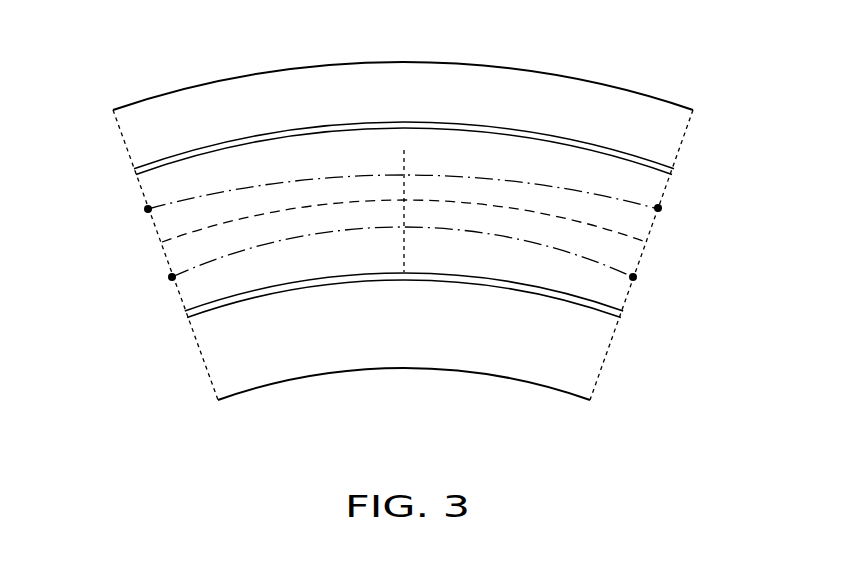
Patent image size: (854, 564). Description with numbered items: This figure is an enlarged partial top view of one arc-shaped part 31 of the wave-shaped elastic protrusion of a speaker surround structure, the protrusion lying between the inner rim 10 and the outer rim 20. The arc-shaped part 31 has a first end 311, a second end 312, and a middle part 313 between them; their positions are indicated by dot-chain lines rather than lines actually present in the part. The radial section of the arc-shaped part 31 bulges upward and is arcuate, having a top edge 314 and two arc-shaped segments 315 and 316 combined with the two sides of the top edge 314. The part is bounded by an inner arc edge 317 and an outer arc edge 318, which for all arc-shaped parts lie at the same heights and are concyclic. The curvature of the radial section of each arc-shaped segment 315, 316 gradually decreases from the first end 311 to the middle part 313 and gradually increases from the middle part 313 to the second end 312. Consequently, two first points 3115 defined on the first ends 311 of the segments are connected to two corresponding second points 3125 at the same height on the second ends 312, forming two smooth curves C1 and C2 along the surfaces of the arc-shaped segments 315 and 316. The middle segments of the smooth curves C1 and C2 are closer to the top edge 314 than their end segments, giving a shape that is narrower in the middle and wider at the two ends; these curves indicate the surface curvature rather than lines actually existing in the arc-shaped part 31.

The inner rim 10 is at (528, 352).
The outer rim 20 is at (630, 122).
The arc-shaped part 31 is at (536, 131).
The first end 311 is at (162, 243).
The second end 312 is at (645, 247).
The middle part 313 is at (403, 150).
The top edge 314 is at (350, 203).
The arc-shaped segment 315 is at (352, 262).
The arc-shaped segment 316 is at (253, 155).
The inner arc edge 317 is at (440, 280).
The outer arc edge 318 is at (188, 150).
The first point 3115 is at (148, 209).
The second point 3125 is at (658, 209).
The smooth curve C1 is at (630, 198).
The smooth curve C2 is at (593, 265).